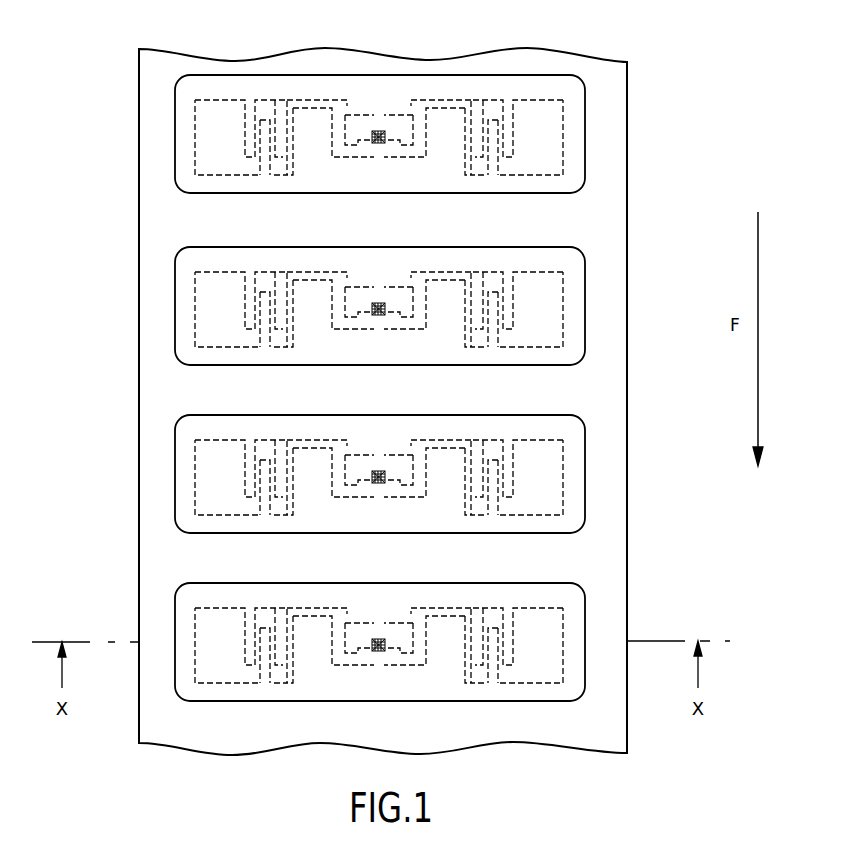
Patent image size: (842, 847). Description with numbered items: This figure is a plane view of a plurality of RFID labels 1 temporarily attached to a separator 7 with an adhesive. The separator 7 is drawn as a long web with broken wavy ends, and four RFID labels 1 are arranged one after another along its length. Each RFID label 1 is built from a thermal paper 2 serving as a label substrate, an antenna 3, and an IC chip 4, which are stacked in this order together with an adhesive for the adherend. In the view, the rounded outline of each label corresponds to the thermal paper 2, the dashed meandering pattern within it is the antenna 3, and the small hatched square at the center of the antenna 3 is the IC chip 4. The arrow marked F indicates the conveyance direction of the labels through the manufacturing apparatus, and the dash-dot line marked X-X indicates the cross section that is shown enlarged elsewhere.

The RFID label 1 is at (416, 358).
The thermal paper 2 is at (552, 92).
The antenna 3 is at (485, 103).
The IC chip 4 is at (381, 131).
The separator 7 is at (158, 373).